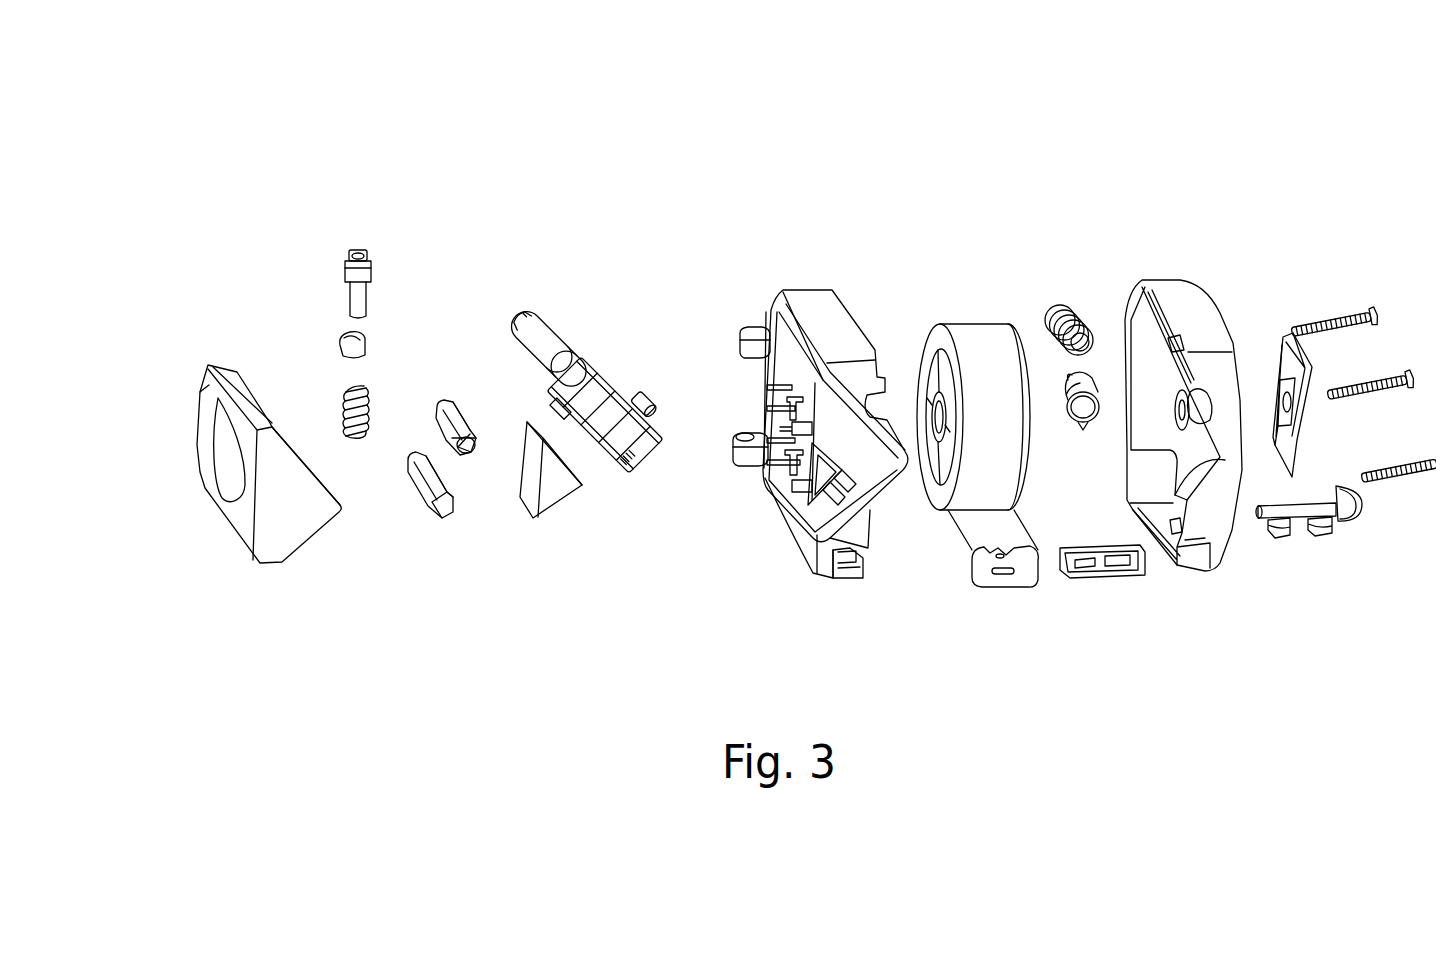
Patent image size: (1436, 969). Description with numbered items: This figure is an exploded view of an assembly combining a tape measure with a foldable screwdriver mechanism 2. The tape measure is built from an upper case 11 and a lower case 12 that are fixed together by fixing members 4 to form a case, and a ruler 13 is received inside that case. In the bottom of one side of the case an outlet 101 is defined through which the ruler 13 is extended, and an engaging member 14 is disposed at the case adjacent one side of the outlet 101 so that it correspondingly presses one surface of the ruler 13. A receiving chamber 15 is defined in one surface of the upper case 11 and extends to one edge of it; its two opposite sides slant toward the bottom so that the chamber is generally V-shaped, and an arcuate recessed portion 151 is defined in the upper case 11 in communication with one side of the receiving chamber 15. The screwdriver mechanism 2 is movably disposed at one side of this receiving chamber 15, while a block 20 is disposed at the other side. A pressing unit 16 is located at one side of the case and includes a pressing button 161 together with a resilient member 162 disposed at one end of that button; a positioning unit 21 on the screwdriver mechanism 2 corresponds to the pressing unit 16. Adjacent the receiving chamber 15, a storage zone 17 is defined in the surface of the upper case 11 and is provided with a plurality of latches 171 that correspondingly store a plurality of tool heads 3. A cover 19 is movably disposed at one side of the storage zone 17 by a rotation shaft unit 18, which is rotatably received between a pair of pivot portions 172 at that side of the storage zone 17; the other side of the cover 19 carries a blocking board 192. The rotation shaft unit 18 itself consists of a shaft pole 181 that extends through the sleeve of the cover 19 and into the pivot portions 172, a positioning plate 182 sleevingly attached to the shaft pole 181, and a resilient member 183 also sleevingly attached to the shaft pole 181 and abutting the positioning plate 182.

The screwdriver mechanism 2 is at (590, 350).
The tool heads 3 is at (432, 513).
The fixing members 4 is at (1350, 315).
The upper case 11 is at (808, 294).
The lower case 12 is at (1200, 320).
The ruler 13 is at (965, 500).
The engaging member 14 is at (1298, 513).
The receiving chamber 15 is at (850, 449).
The pressing unit 16 is at (1036, 302).
The storage zone 17 is at (758, 400).
The rotation shaft unit 18 is at (296, 275).
The cover 19 is at (232, 516).
The block 20 is at (556, 498).
The positioning unit 21 is at (635, 400).
The outlet 101 is at (848, 560).
The arcuate recessed portion 151 is at (800, 362).
The pressing button 161 is at (1093, 376).
The resilient member 162 is at (1075, 308).
The latches 171 is at (757, 458).
The pivot portions 172 is at (756, 330).
The shaft pole 181 is at (352, 252).
The positioning plate 182 is at (340, 342).
The resilient member 183 is at (368, 388).
The blocking board 192 is at (299, 525).